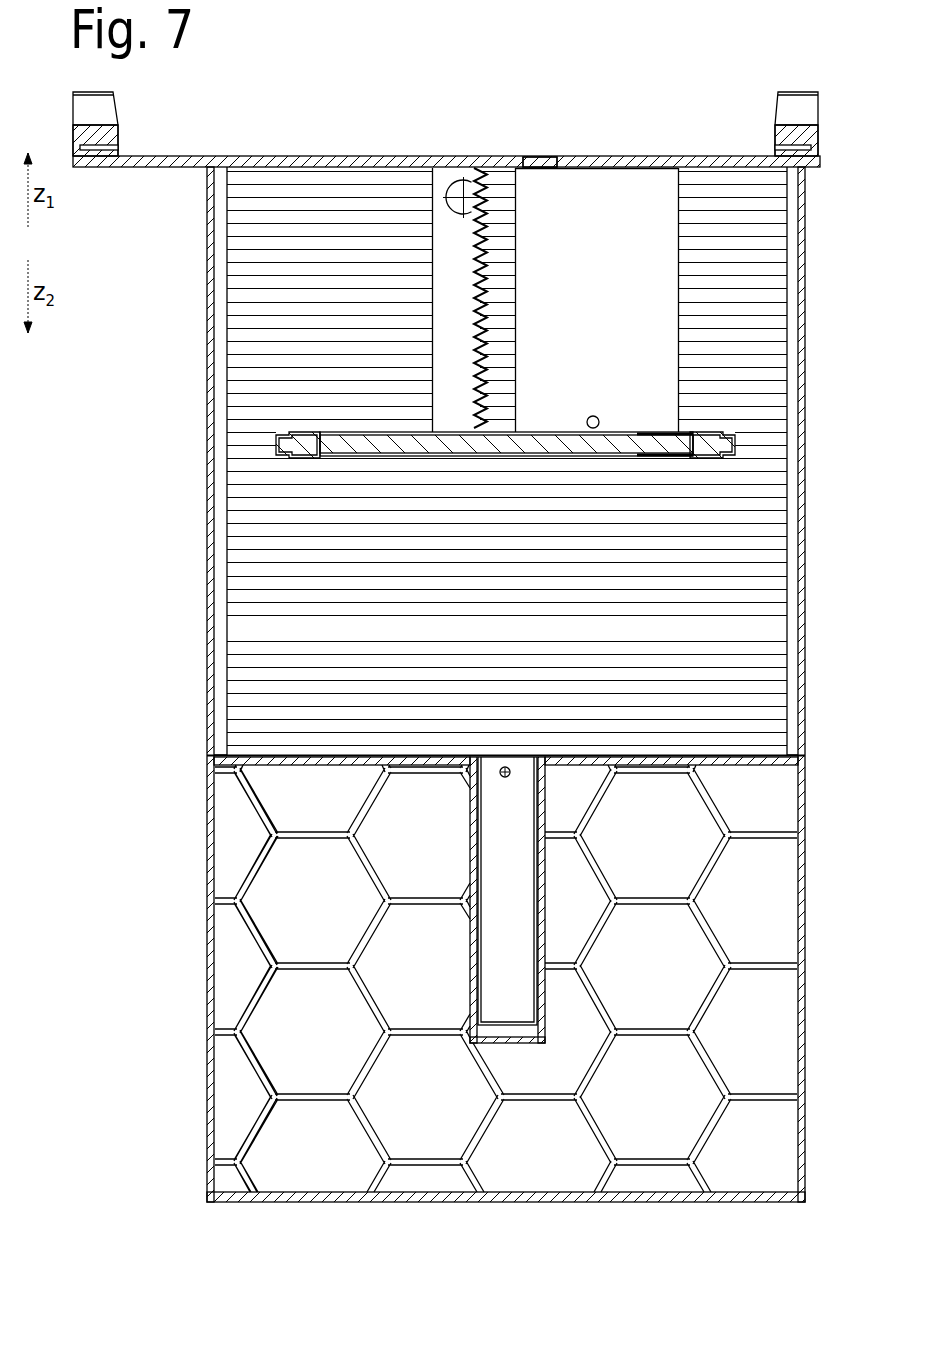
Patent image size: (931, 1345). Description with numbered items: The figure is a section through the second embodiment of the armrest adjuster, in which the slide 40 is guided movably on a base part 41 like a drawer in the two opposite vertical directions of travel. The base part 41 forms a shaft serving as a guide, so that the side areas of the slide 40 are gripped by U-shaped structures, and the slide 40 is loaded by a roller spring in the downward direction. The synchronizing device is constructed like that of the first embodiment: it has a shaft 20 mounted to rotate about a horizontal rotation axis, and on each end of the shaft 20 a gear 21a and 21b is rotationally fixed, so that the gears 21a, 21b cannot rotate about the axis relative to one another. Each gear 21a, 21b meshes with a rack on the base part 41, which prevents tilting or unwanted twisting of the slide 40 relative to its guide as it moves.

The shaft 20 is at (370, 443).
The gear 21a is at (715, 462).
The gear 21b is at (297, 458).
The slide 40 is at (250, 440).
The base part 41 is at (207, 538).